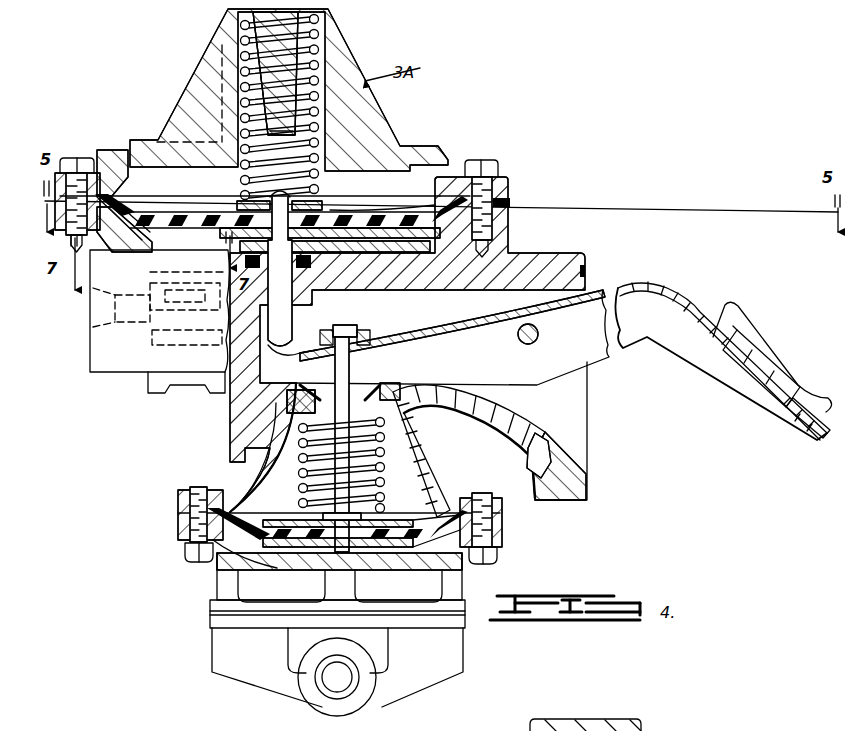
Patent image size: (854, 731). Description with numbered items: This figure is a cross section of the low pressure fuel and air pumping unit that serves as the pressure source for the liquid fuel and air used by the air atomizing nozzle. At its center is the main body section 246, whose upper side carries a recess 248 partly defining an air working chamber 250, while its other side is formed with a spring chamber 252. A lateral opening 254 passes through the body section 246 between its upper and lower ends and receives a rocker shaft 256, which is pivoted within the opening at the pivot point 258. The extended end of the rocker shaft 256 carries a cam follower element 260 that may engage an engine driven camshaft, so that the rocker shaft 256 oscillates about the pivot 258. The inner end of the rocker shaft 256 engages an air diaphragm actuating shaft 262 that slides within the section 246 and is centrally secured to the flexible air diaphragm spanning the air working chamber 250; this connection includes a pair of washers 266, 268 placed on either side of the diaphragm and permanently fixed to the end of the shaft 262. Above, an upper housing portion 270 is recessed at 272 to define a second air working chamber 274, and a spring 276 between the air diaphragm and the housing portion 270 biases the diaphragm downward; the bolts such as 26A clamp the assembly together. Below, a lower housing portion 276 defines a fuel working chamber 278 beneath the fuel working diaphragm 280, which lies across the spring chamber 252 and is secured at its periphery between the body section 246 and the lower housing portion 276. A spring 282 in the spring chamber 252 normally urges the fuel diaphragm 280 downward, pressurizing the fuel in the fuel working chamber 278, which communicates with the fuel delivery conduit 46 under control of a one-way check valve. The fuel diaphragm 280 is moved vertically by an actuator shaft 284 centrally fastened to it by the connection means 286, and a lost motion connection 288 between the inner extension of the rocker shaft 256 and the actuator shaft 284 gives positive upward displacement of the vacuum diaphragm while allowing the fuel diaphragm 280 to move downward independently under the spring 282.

The upper housing portion 270 is at (197, 89).
The spring / lower housing portion 276 is at (320, 62).
The second air working chamber 274 is at (190, 193).
The recess 272 is at (127, 165).
The washer 266 is at (203, 210).
The air working chamber 250 is at (370, 233).
The bolt 26A is at (433, 240).
The recess 248 is at (443, 232).
The main body section 246 is at (569, 256).
The air diaphragm actuating shaft 262 is at (286, 317).
The rocker shaft 256 is at (505, 347).
The lateral opening 254 is at (562, 413).
The pivot point 258 is at (540, 333).
The cam follower element 260 is at (748, 333).
The actuator shaft 284 is at (349, 368).
The washer 268 is at (178, 232).
The spring 282 is at (264, 470).
The lost motion connection 288 is at (287, 388).
The spring chamber 252 is at (410, 490).
The connection means 286 is at (302, 553).
The fuel working chamber 278 is at (243, 553).
The fuel working diaphragm 280 is at (187, 550).
The fuel delivery conduit 46 is at (345, 679).